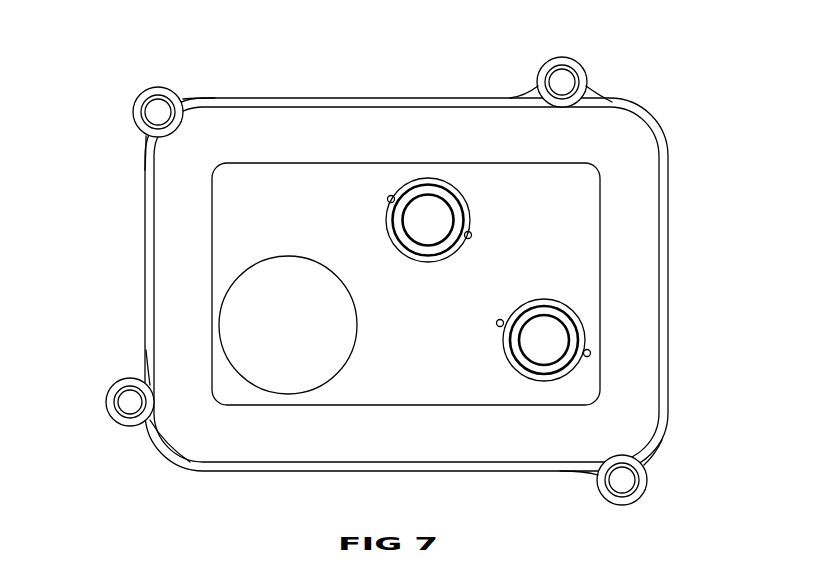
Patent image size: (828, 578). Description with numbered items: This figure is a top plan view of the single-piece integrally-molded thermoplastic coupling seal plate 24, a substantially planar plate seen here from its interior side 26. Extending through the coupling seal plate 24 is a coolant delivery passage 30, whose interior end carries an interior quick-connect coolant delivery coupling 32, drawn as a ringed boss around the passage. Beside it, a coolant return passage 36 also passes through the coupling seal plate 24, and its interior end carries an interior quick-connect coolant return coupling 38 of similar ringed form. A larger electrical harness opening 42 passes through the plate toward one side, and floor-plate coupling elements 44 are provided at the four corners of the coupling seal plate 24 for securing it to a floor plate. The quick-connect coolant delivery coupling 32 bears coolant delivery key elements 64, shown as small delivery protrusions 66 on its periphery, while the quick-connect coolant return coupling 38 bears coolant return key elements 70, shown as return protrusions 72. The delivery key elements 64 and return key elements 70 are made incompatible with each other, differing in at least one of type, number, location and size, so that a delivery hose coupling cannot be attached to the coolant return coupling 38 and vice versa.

The single-piece integrally-molded thermoplastic coupling seal plate 24 is at (697, 140).
The interior side 26 is at (551, 201).
The coolant delivery passage 30 is at (430, 220).
The interior quick-connect coolant delivery coupling 32 is at (411, 257).
The coolant return passage 36 is at (544, 338).
The interior quick-connect coolant return coupling 38 is at (509, 360).
The electrical harness opening 42 is at (272, 331).
The floor-plate coupling elements 44 is at (123, 99).
The coolant delivery key elements 64 is at (387, 195).
The delivery protrusions 66 is at (388, 201).
The coolant return key elements 70 is at (494, 325).
The return protrusions 72 is at (496, 328).